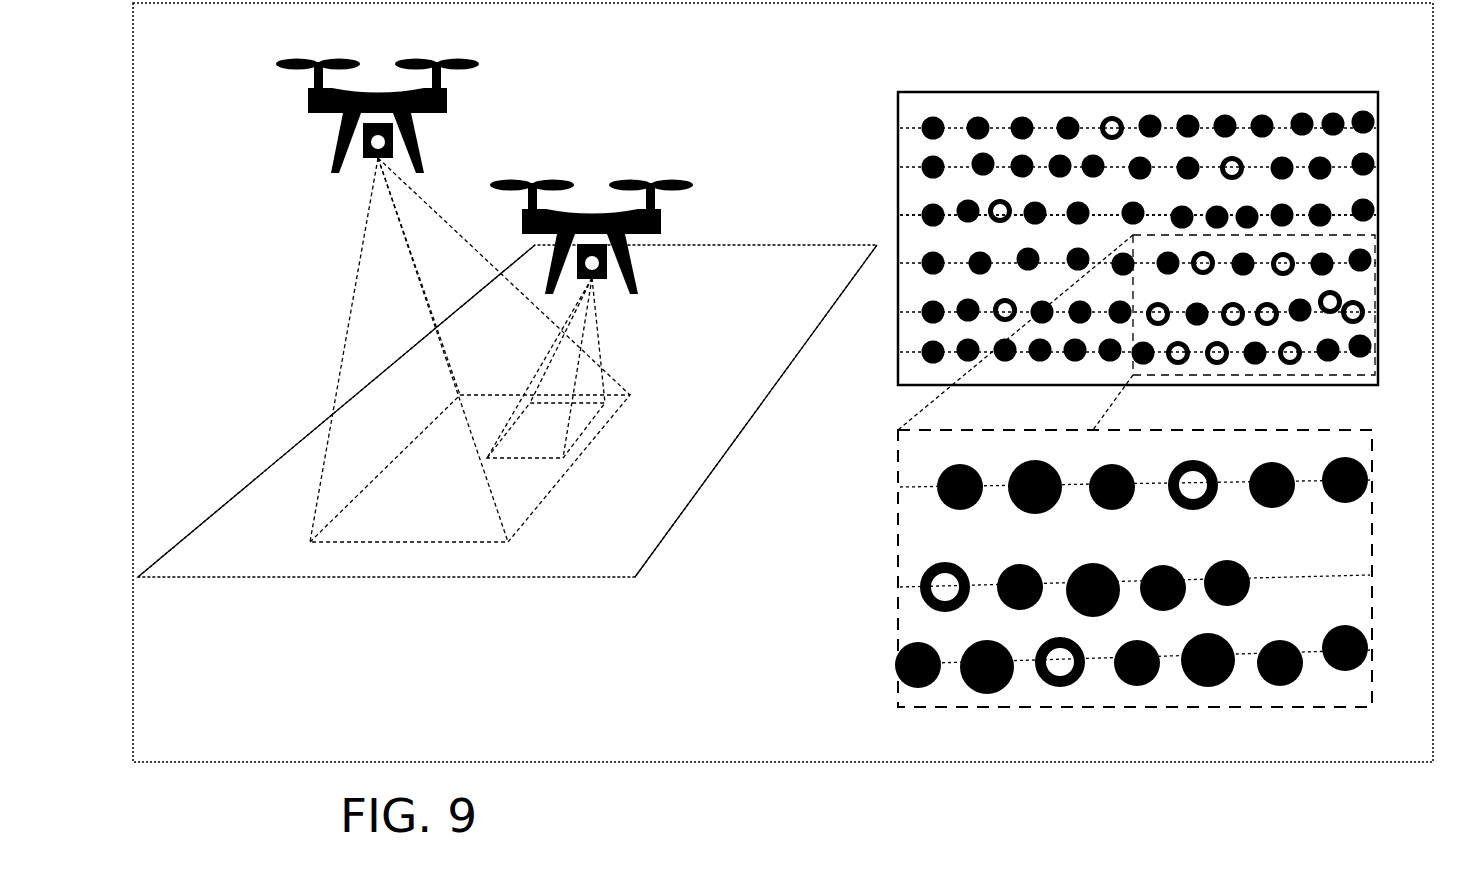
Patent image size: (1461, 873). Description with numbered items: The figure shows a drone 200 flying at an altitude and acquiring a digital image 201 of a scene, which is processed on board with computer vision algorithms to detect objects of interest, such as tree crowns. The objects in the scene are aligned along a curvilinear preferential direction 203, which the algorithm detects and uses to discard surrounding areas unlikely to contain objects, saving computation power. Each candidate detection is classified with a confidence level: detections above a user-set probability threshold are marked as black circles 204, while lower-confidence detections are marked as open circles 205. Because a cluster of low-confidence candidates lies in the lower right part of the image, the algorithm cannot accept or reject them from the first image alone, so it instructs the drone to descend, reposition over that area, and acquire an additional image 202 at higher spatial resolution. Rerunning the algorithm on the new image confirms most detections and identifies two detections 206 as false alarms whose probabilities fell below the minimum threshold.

The drone 200 is at (337, 158).
The digital image 201 is at (387, 460).
The additional image 202 is at (533, 410).
The preferential direction 203 is at (895, 225).
The black circles 204 is at (1012, 118).
The open circles 205 is at (1098, 118).
The false alarm detections 206 is at (1366, 312).